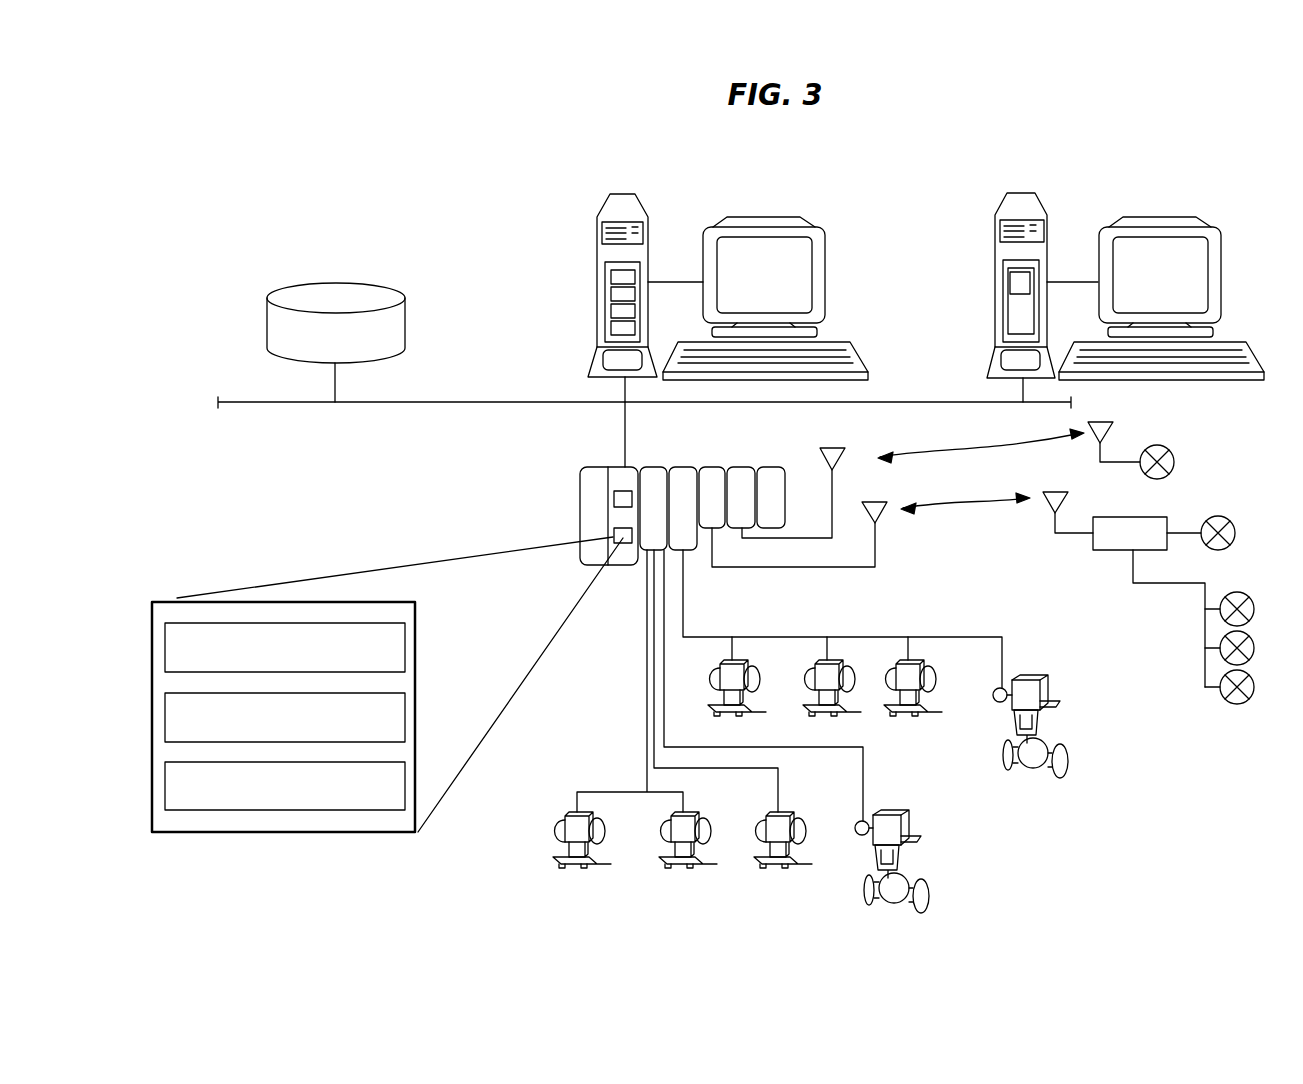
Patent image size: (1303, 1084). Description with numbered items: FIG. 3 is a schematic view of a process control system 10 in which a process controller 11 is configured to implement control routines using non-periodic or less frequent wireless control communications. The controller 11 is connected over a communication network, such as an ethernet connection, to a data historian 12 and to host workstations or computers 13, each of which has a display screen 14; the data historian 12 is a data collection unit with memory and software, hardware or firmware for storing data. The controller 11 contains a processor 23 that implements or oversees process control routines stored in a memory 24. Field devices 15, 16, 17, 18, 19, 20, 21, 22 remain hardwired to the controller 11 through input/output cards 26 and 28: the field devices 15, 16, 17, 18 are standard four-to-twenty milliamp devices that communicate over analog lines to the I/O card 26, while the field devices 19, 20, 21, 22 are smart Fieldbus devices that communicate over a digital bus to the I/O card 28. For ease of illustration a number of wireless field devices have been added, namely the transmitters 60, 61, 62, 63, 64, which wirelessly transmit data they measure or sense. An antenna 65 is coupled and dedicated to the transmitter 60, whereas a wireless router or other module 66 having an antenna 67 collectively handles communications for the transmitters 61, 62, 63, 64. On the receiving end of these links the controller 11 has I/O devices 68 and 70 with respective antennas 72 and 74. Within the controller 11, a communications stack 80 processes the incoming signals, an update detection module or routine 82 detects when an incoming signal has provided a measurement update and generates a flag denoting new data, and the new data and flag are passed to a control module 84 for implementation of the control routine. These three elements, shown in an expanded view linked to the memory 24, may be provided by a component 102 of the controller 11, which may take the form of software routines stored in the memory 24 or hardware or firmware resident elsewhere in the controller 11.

The process control system 10 is at (906, 182).
The process controller 11 is at (618, 475).
The data historian 12 is at (265, 310).
The host workstation 13 is at (597, 215).
The display screen 14 is at (825, 250).
The field device 15 is at (565, 847).
The field device 16 is at (672, 847).
The field device 17 is at (767, 847).
The field device 18 is at (883, 847).
The field device 19 is at (738, 660).
The field device 20 is at (833, 660).
The field device 21 is at (916, 660).
The field device 22 is at (1032, 673).
The processor 23 is at (613, 498).
The memory 24 is at (613, 529).
The input/output card 26 is at (653, 475).
The input/output card 28 is at (685, 475).
The transmitter 60 is at (1174, 455).
The transmitter 61 is at (1235, 531).
The transmitter 62 is at (1254, 609).
The transmitter 63 is at (1254, 648).
The transmitter 64 is at (1254, 687).
The antenna 65 is at (1110, 432).
The wireless router 66 is at (1108, 552).
The antenna 67 is at (1054, 522).
The input/output device 68 is at (738, 475).
The input/output device 70 is at (772, 475).
The antenna 72 is at (876, 540).
The antenna 74 is at (835, 480).
The communications stack 80 is at (165, 648).
The update detection module 82 is at (165, 716).
The control module 84 is at (165, 786).
The component of the controller 102 is at (287, 832).